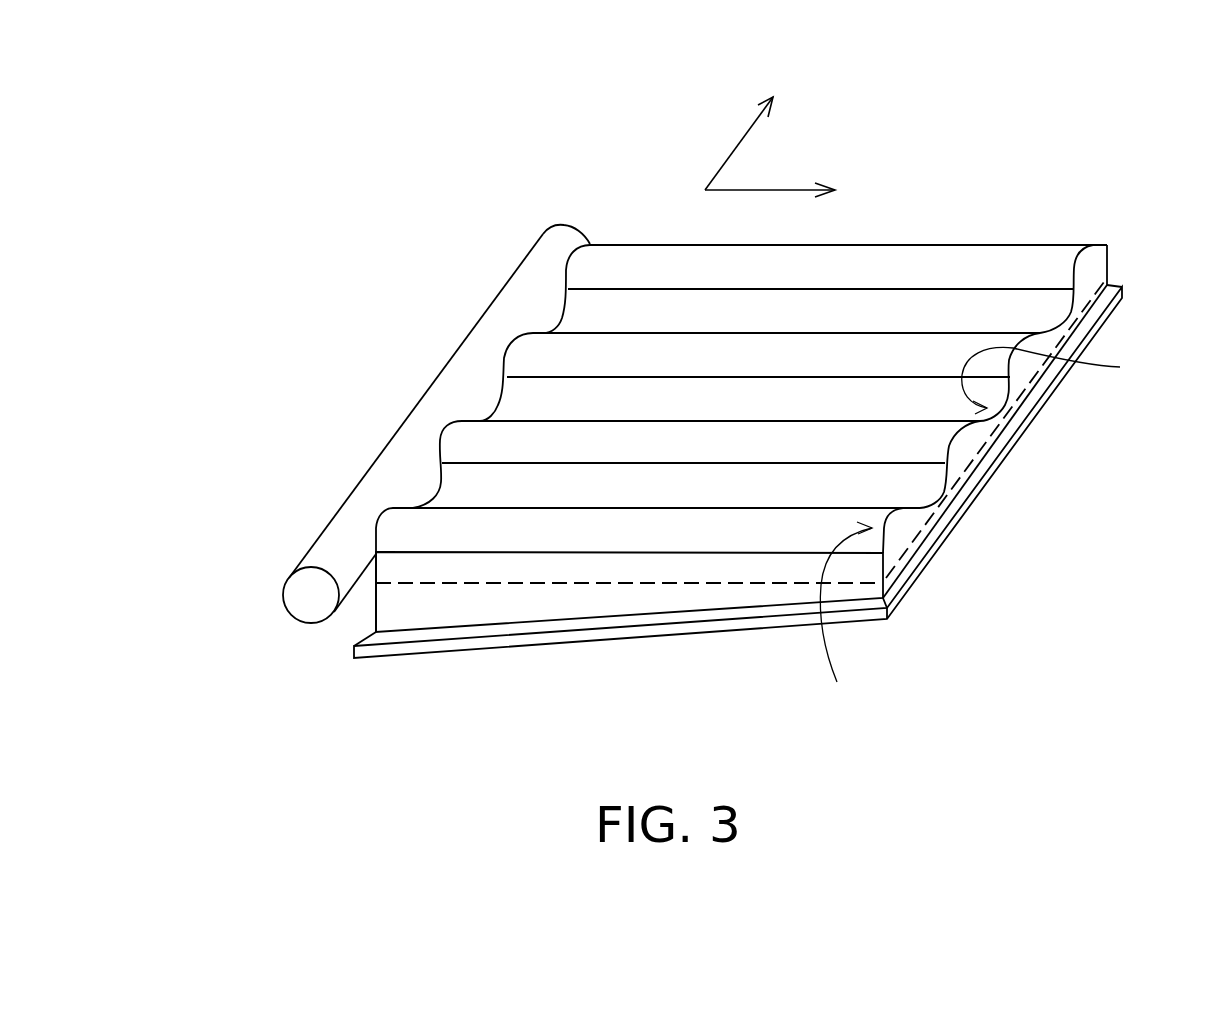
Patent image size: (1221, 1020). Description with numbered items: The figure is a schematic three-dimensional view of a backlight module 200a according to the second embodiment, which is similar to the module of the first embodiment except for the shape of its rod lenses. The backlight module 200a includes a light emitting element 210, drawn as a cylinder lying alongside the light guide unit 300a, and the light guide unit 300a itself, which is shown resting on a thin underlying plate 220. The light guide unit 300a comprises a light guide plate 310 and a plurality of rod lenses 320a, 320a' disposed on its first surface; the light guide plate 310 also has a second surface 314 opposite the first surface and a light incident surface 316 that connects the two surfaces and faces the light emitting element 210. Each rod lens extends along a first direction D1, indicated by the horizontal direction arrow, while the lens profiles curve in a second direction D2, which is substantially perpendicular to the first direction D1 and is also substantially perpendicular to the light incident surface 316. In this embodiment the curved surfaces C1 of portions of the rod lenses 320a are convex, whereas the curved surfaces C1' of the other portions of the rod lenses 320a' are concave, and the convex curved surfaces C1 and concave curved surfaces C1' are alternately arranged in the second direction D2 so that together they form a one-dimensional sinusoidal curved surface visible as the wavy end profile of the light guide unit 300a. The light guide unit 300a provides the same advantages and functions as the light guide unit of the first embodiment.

The backlight module 200a is at (1080, 735).
The light emitting element 210 is at (308, 602).
The base plate 220 is at (483, 643).
The light guide unit 300a is at (1108, 457).
The light guide plate 310 is at (918, 547).
The second surface 314 is at (904, 567).
The light incident surface 316 is at (375, 602).
The rod lenses 320a is at (735, 399).
The rod lenses 320a' is at (771, 464).
The curved surfaces C1 is at (846, 624).
The curved surfaces C1' is at (1056, 380).
The first direction D1 is at (787, 193).
The second direction D2 is at (750, 124).